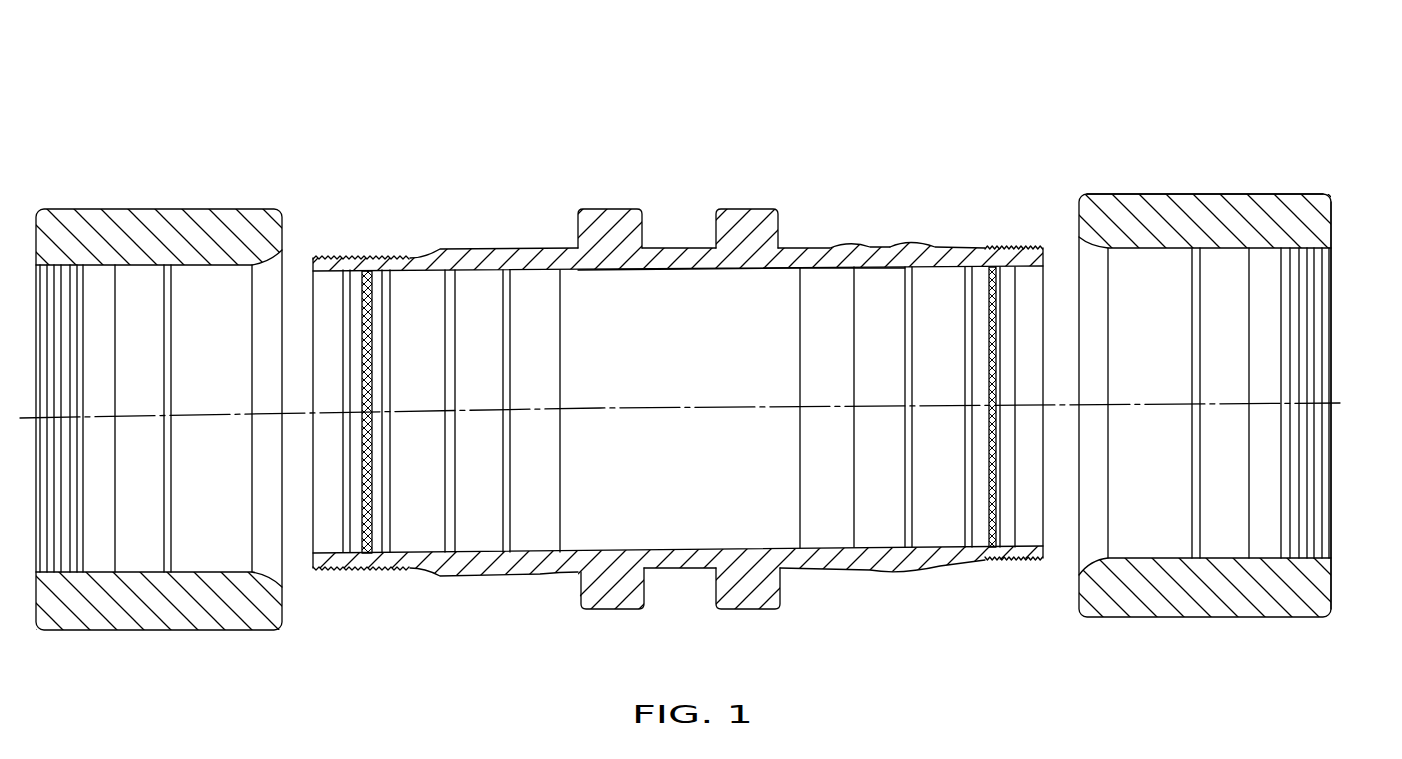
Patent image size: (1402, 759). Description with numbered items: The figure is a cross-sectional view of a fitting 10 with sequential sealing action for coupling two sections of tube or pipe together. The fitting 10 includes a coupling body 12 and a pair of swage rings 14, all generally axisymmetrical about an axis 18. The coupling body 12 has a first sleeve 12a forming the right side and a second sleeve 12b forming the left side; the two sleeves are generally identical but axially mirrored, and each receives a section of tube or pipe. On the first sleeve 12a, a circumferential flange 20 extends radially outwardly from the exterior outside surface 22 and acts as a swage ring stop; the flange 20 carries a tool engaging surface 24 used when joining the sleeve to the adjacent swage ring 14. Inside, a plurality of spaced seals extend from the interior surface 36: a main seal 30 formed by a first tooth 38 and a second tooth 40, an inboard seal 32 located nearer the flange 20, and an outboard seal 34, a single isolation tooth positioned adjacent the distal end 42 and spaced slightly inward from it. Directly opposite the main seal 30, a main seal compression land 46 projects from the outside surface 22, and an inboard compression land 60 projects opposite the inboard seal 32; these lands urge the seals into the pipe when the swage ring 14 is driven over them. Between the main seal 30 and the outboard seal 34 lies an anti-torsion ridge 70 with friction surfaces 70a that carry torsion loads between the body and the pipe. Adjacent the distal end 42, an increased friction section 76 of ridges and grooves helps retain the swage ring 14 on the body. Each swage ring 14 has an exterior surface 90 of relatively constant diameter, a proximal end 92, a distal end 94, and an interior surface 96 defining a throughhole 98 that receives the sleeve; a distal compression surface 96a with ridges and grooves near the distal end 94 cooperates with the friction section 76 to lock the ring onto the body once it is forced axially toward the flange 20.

The fitting 10 is at (855, 98).
The coupling body 12 is at (739, 402).
The first sleeve 12a is at (898, 574).
The second sleeve 12b is at (452, 580).
The swage ring 14 is at (175, 200).
The axis 18 is at (649, 408).
The circumferential flange 20 is at (746, 212).
The exterior outside surface 22 is at (678, 246).
The tool engaging surface 24 is at (714, 228).
The main seal 30 is at (905, 280).
The inboard seal 32 is at (843, 287).
The outboard seal 34 is at (1013, 268).
The interior surface 36 is at (723, 274).
The first tooth 38 is at (912, 270).
The second tooth 40 is at (903, 270).
The distal end 42 is at (1046, 262).
The main seal compression land 46 is at (910, 243).
The inboard compression land 60 is at (852, 242).
The anti-torsion ridge 70 is at (989, 272).
The friction surfaces 70a is at (996, 421).
The increased friction section 76 is at (1010, 244).
The exterior surface 90 is at (1162, 193).
The proximal end 92 is at (1078, 598).
The distal end 94 is at (1331, 226).
The interior surface 96 is at (1164, 254).
The distal compression surface 96a is at (1314, 260).
The throughhole 98 is at (1112, 512).